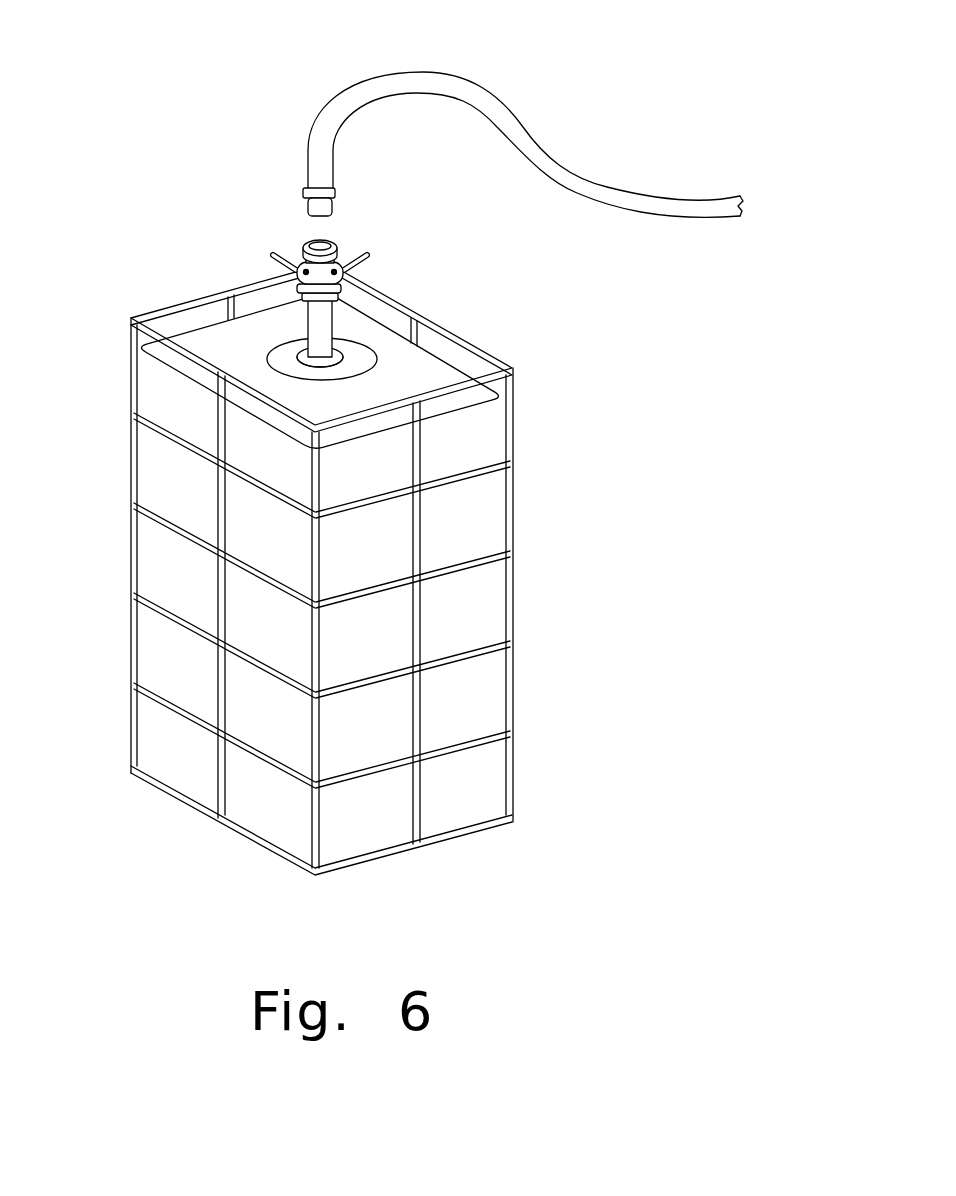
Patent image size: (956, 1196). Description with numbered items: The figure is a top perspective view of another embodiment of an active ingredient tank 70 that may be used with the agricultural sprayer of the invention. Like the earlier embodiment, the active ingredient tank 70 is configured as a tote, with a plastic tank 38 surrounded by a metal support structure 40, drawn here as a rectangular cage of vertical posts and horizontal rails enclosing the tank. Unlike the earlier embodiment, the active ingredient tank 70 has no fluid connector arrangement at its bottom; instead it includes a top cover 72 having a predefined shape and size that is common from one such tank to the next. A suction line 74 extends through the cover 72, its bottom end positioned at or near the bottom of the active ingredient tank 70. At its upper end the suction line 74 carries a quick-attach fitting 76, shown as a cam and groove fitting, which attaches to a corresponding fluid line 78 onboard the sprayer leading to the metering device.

The active ingredient tank 70 is at (393, 451).
The metal support structure 40 is at (126, 636).
The plastic tank 38 is at (163, 479).
The top cover 72 is at (360, 357).
The suction line 74 is at (336, 322).
The quick-attach fitting 76 is at (340, 232).
The fluid line 78 is at (503, 110).